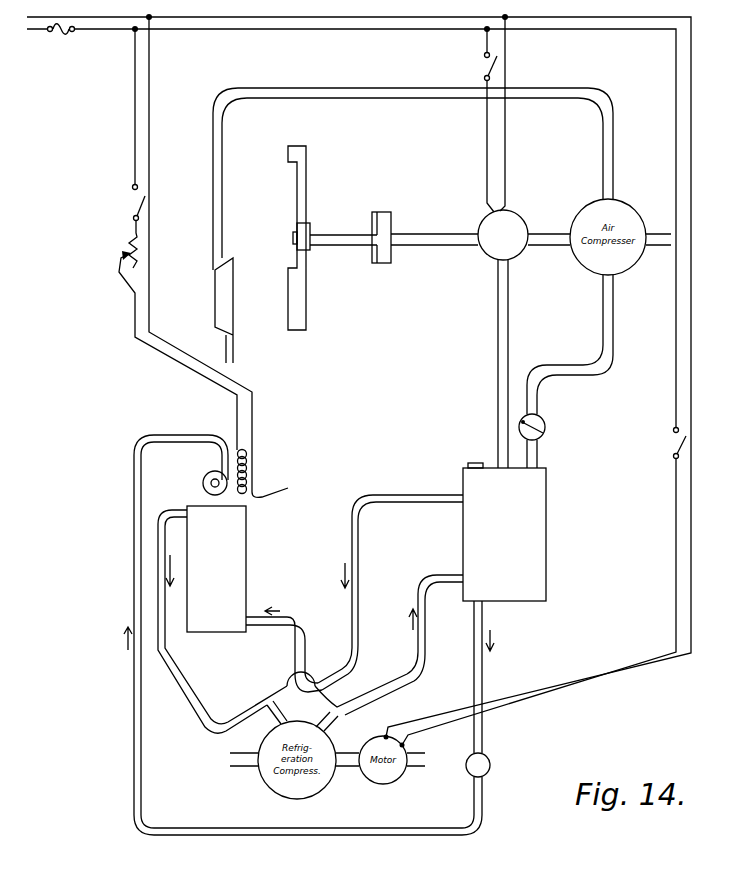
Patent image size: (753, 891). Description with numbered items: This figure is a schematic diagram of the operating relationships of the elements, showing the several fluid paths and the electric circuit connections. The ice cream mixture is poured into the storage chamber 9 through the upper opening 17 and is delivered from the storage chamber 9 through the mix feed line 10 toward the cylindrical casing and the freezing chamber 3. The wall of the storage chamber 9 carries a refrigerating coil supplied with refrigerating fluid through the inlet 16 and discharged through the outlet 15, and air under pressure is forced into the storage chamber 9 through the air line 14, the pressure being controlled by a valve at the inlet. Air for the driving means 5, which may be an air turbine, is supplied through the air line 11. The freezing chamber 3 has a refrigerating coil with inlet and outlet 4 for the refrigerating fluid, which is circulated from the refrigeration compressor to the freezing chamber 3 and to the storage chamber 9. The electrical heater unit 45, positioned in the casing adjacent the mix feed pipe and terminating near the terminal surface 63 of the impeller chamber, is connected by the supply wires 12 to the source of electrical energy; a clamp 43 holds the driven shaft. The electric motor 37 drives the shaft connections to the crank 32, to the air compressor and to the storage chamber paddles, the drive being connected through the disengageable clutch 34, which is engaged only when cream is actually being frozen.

The freezing chamber 3 is at (240, 568).
The refrigerating coil inlet and outlet 4 is at (178, 510).
The driving means 5 is at (218, 305).
The storage chamber 9 is at (546, 582).
The mix feed line 10 is at (483, 685).
The air line 11 is at (213, 217).
The supply wires 12 is at (134, 336).
The air line 14 is at (613, 335).
The outlet 15 is at (417, 498).
The inlet 16 is at (423, 657).
The upper opening 17 is at (476, 463).
The crank 32 is at (296, 160).
The disengageable clutch 34 is at (386, 212).
The electric motor 37 is at (516, 217).
The clamp 43 is at (498, 343).
The electrical heater unit 45 is at (276, 475).
The transverse terminal surface 63 is at (203, 480).